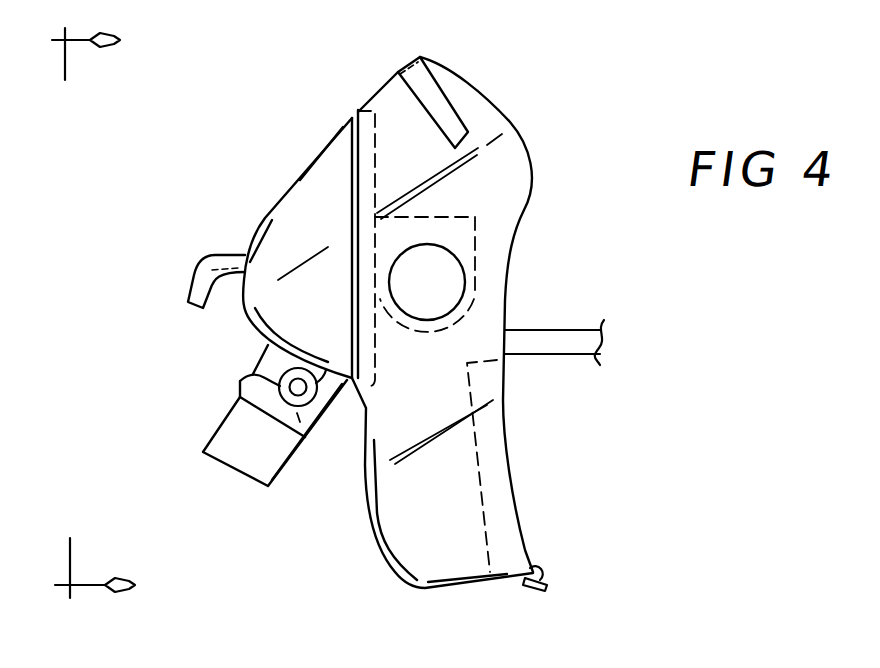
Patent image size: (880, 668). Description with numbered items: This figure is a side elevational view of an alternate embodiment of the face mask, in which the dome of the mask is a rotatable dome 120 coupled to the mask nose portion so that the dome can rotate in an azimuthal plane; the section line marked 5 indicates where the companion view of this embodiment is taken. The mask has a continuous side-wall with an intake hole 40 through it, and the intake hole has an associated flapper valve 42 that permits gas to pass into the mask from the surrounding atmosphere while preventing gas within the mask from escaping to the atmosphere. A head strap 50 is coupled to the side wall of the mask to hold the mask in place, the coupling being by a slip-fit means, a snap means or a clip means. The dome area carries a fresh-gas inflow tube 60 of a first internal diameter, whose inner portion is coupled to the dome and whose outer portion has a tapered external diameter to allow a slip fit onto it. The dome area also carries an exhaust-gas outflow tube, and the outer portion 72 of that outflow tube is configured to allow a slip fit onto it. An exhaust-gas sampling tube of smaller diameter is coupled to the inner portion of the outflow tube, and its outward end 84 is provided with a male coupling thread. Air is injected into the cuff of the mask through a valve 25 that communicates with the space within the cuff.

The rotatable dome 120 is at (297, 207).
The fresh-gas inflow tube 60 is at (187, 288).
The outward end 84 is at (240, 381).
The outer portion 72 is at (245, 452).
The flapper valve 42 is at (452, 240).
The intake hole 40 is at (442, 283).
The head strap 50 is at (547, 355).
The valve 25 is at (529, 592).
The section line 5- 5 is at (84, 318).